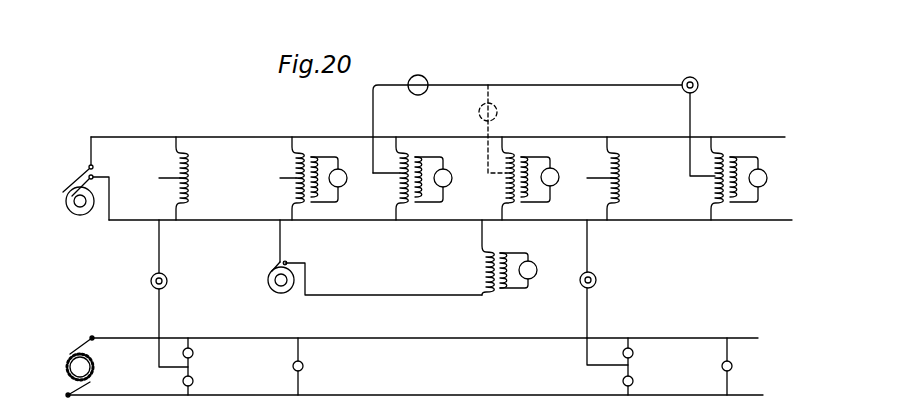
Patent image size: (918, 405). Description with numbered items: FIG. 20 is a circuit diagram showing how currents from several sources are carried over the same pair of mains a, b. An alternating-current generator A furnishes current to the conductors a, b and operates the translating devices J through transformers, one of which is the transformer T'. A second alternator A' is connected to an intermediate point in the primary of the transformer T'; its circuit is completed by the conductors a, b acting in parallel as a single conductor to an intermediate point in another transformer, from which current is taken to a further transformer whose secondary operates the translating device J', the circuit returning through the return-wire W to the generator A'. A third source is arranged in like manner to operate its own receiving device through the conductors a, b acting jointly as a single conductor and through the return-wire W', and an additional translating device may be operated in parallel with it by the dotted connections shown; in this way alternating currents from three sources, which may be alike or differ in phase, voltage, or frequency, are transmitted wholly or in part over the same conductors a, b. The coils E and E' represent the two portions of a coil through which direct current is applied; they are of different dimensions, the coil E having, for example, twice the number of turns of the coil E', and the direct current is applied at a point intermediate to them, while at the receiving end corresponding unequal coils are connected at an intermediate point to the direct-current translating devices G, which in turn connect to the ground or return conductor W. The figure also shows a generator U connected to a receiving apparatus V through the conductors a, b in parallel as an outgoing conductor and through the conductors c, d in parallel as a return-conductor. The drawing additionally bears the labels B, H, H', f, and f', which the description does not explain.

The alternating-current generator A is at (82, 178).
The second alternator A' is at (281, 264).
The battery B is at (69, 366).
The coil portion E is at (189, 157).
The coil portion E' is at (182, 199).
The transformer T' is at (309, 178).
The translating device J is at (553, 178).
The translating device J' is at (534, 270).
The return conductor W is at (383, 281).
The return-wire W' is at (527, 119).
The generator U is at (151, 281).
The receiving apparatus V is at (596, 280).
The lamps H is at (183, 366).
The lamps H' is at (619, 366).
The direct-current translating device G is at (522, 366).
The branch conductor f is at (166, 279).
The branch conductor f' is at (595, 279).
The main conductor a is at (438, 128).
The main conductor b is at (450, 231).
The conductor c is at (425, 328).
The conductor d is at (415, 385).